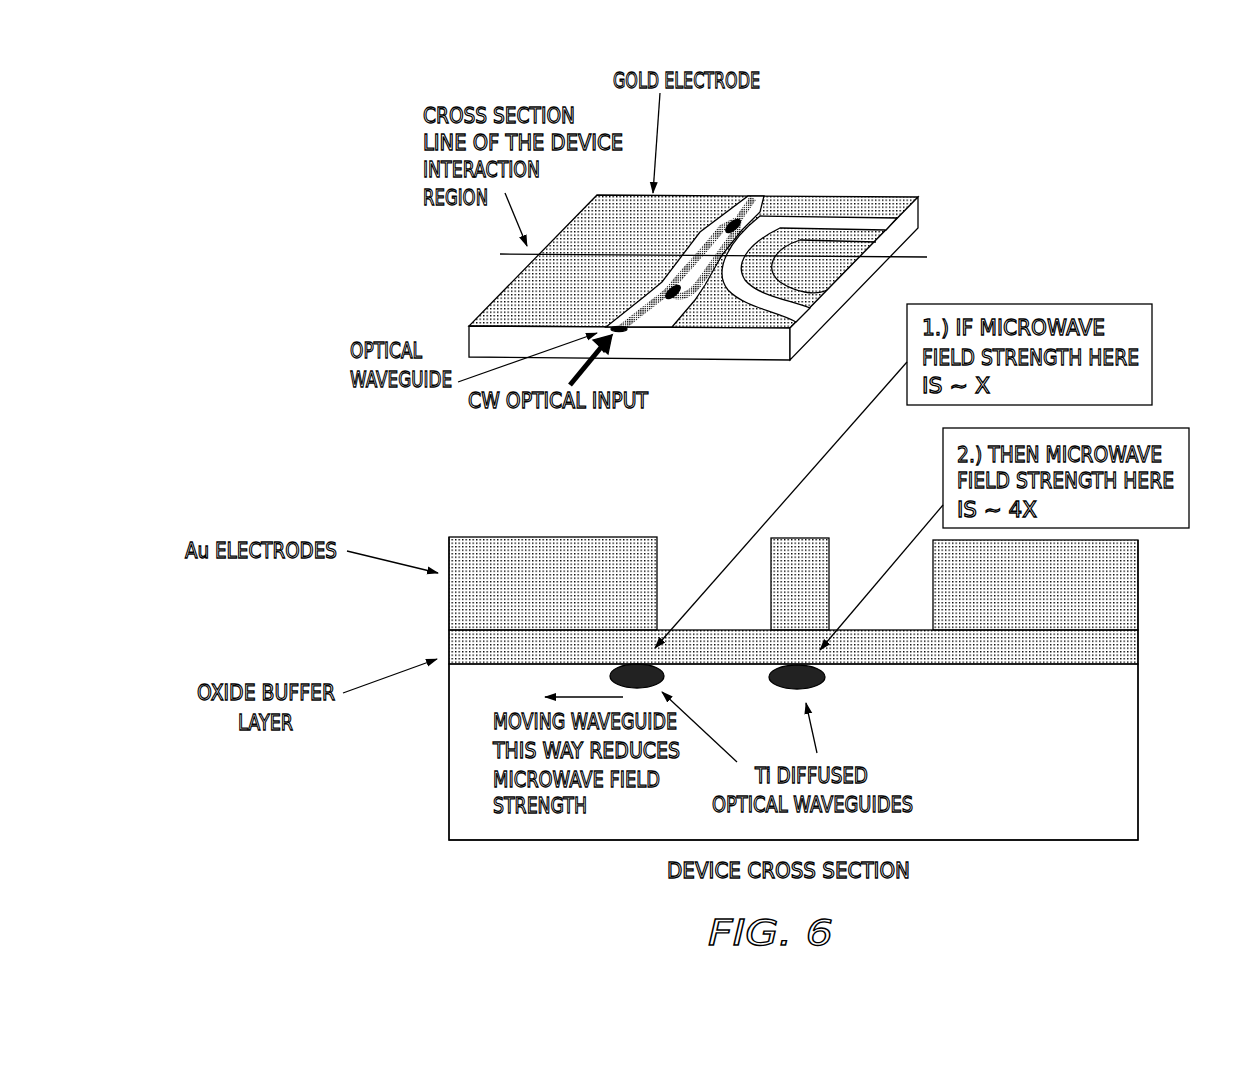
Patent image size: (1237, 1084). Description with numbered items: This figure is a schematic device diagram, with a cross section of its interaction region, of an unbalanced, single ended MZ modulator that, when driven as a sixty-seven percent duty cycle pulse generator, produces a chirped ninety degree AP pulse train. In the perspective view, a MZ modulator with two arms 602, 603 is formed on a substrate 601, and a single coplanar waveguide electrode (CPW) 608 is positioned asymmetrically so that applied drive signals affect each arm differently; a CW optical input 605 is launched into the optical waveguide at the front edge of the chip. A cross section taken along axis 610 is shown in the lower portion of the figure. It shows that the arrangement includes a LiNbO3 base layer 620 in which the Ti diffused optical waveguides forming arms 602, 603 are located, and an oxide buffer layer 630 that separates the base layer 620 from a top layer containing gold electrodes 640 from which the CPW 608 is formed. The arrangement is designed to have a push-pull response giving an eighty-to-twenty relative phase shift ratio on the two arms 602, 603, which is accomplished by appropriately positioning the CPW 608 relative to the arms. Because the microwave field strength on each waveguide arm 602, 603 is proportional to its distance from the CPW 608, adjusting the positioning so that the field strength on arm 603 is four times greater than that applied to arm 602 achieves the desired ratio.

The substrate 601 is at (790, 346).
The arm 602 is at (710, 218).
The arm 603 is at (690, 300).
The CW optical input 605 is at (523, 437).
The coplanar waveguide electrode (CPW) 608 is at (808, 217).
The axis 610 is at (913, 257).
The LiNbO3 base layer 620 is at (1138, 760).
The oxide buffer layer 630 is at (1138, 657).
The Au electrodes 640 is at (1138, 592).